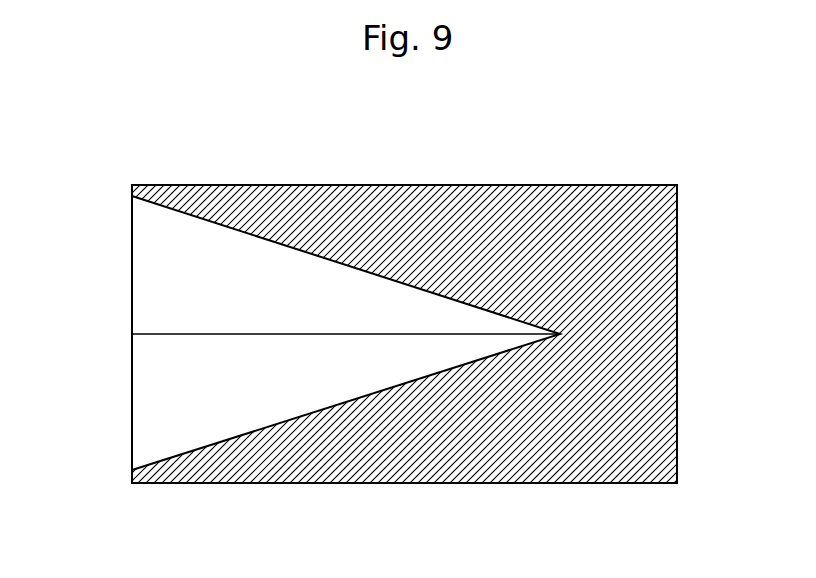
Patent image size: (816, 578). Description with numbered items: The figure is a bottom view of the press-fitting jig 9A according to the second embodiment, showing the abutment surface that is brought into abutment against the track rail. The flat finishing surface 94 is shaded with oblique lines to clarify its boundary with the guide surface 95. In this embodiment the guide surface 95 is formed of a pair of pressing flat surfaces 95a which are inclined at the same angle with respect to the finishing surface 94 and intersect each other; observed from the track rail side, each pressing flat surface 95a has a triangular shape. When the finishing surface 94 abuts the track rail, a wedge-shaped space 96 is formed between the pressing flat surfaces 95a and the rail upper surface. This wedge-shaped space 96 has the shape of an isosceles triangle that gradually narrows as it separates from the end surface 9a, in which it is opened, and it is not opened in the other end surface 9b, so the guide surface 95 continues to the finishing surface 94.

The press-fitting jig 9A is at (699, 195).
The finishing surface 94 is at (565, 212).
The end surface 9a is at (132, 415).
The end surface 9b is at (678, 332).
The pressing flat surface 95a is at (355, 285).
The guide surface 95 is at (346, 333).
The wedge-shaped space 96 is at (247, 402).